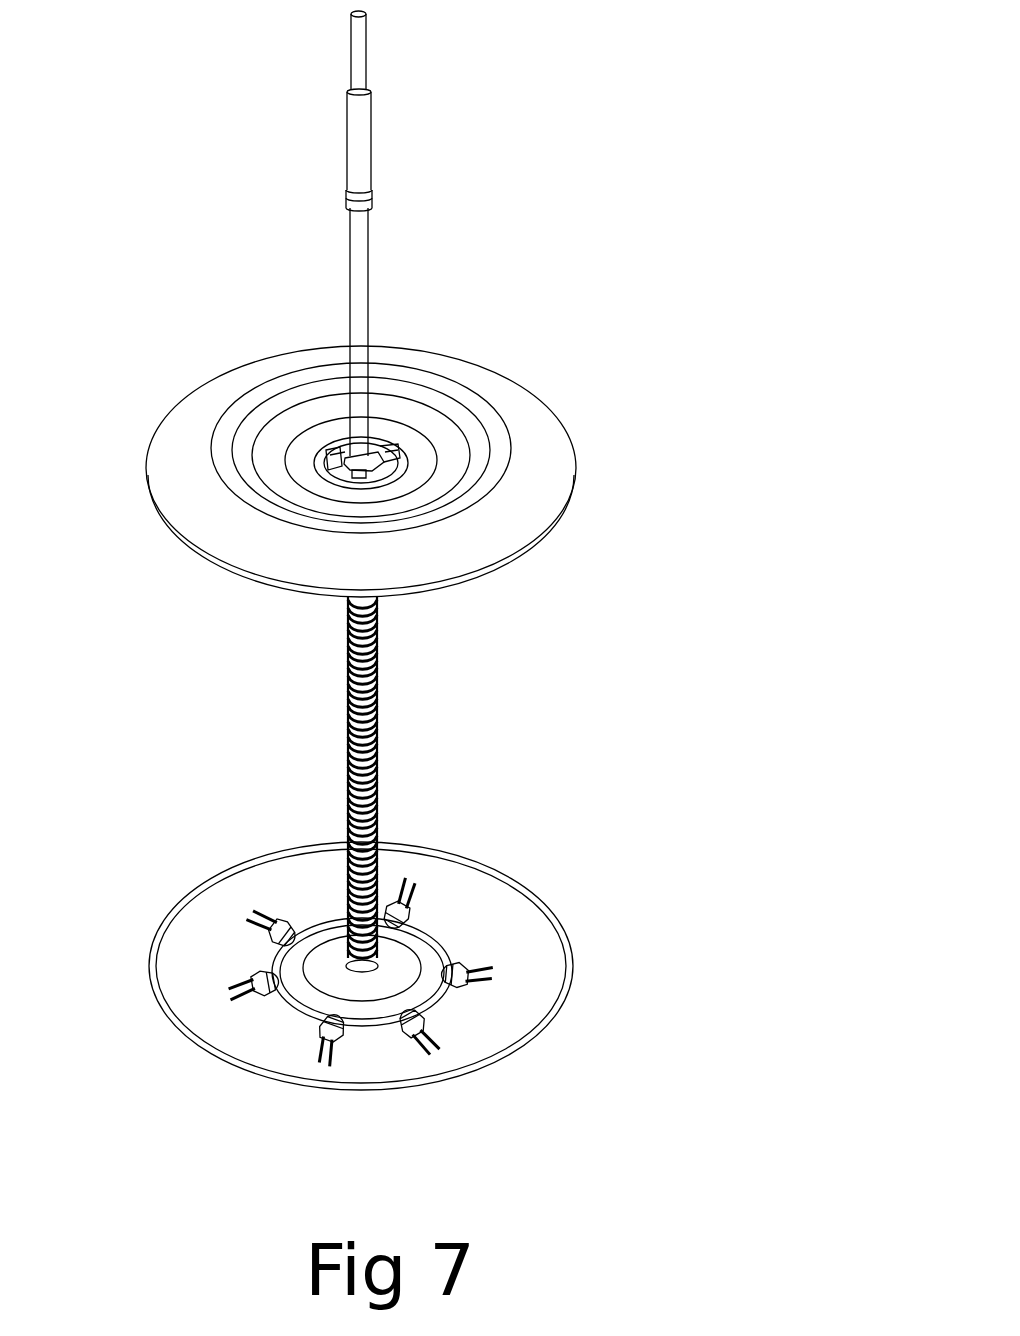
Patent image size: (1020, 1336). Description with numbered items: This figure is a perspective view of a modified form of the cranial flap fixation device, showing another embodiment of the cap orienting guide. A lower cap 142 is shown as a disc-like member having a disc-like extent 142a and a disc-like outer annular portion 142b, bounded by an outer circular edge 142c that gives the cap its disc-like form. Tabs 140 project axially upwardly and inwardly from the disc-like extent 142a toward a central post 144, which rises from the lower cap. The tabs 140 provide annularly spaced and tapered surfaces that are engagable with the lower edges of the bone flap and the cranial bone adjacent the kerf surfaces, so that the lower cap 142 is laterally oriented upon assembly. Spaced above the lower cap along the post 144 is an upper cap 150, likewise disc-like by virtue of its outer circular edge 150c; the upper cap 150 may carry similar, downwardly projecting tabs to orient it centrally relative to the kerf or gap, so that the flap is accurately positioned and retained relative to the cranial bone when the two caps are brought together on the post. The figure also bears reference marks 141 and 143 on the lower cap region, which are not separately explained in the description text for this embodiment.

The upper cap 150 is at (498, 304).
The outer circular edge of upper cap 150c is at (570, 497).
The post 144 is at (434, 717).
The lower cap 142 is at (418, 1006).
The disc-like extent 142a is at (474, 967).
The disc-like outer annular portion 142b is at (499, 905).
The outer circular edge of lower cap 142c is at (482, 1065).
The edge of base disc 143 is at (240, 887).
The base disc surface 141 is at (277, 1020).
The tabs 140 is at (262, 968).